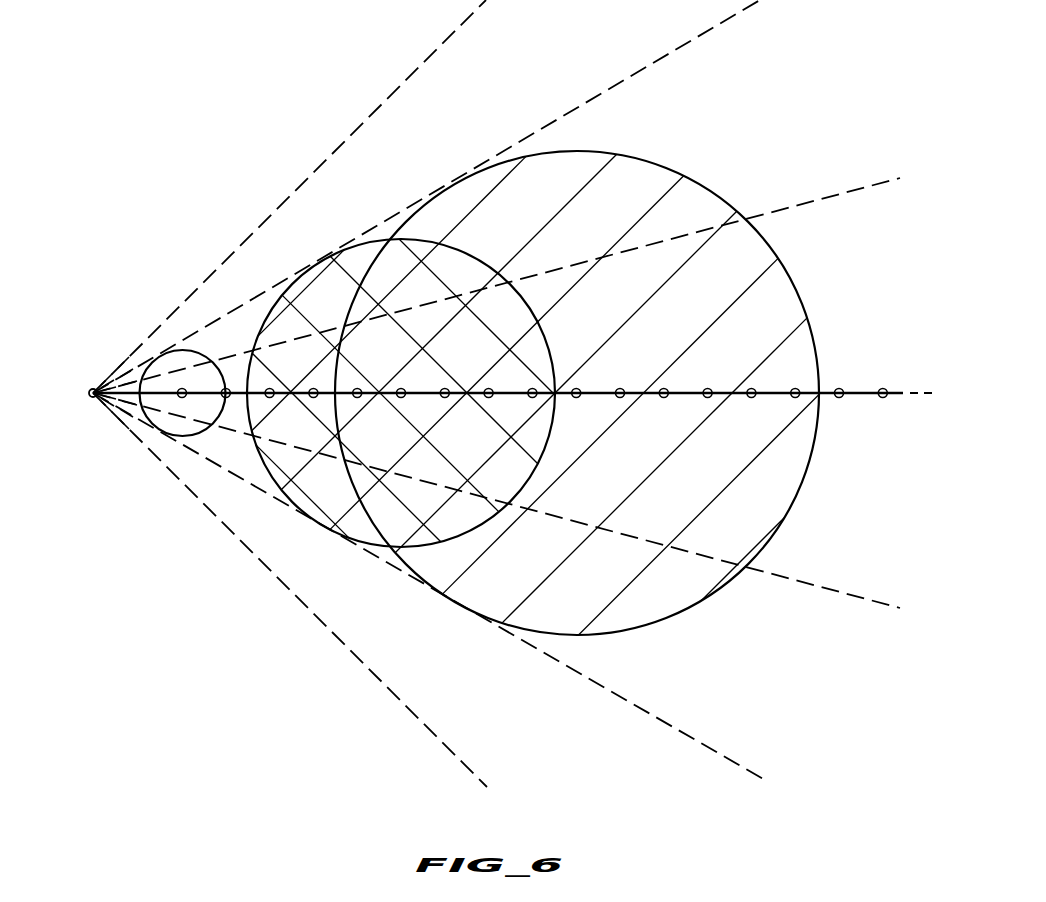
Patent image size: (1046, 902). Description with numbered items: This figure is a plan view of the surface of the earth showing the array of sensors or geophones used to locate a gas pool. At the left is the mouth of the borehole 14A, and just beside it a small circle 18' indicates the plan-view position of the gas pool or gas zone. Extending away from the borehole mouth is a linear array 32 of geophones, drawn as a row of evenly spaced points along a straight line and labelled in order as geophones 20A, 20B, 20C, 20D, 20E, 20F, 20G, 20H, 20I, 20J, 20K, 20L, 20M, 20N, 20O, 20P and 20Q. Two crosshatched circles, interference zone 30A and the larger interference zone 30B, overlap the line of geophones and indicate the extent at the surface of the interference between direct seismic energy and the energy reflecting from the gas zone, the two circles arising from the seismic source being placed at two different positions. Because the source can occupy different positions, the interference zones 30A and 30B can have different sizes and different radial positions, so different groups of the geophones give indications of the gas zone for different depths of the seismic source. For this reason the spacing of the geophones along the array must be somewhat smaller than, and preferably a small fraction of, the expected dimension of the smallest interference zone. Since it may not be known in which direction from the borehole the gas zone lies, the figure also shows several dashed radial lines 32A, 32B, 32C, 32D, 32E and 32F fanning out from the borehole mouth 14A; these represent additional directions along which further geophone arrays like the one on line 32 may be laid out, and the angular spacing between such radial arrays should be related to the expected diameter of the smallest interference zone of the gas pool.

The mouth of the borehole 14A is at (89, 390).
The plan view of the gas pool or gas zone 18' is at (103, 407).
The geophone 20A is at (183, 398).
The geophone 20B is at (226, 388).
The geophone 20C is at (270, 398).
The geophone 20D is at (313, 388).
The geophone 20E is at (358, 398).
The geophone 20F is at (401, 388).
The geophone 20G is at (445, 398).
The geophone 20H is at (488, 388).
The geophone 20I is at (536, 398).
The geophone 20J is at (576, 388).
The geophone 20K is at (620, 388).
The geophone 20L is at (662, 398).
The geophone 20M is at (707, 388).
The geophone 20N is at (750, 398).
The geophone 20O is at (794, 388).
The geophone 20P is at (840, 398).
The geophone 20Q is at (882, 388).
The interference zone 30A is at (375, 550).
The interference zone 30B is at (650, 623).
The linear array of geophones 32 is at (903, 397).
The radial line 32A is at (813, 195).
The radial line 32B is at (560, 120).
The radial line 32C is at (363, 118).
The radial line 32D is at (832, 592).
The radial line 32E is at (612, 692).
The radial line 32F is at (400, 698).